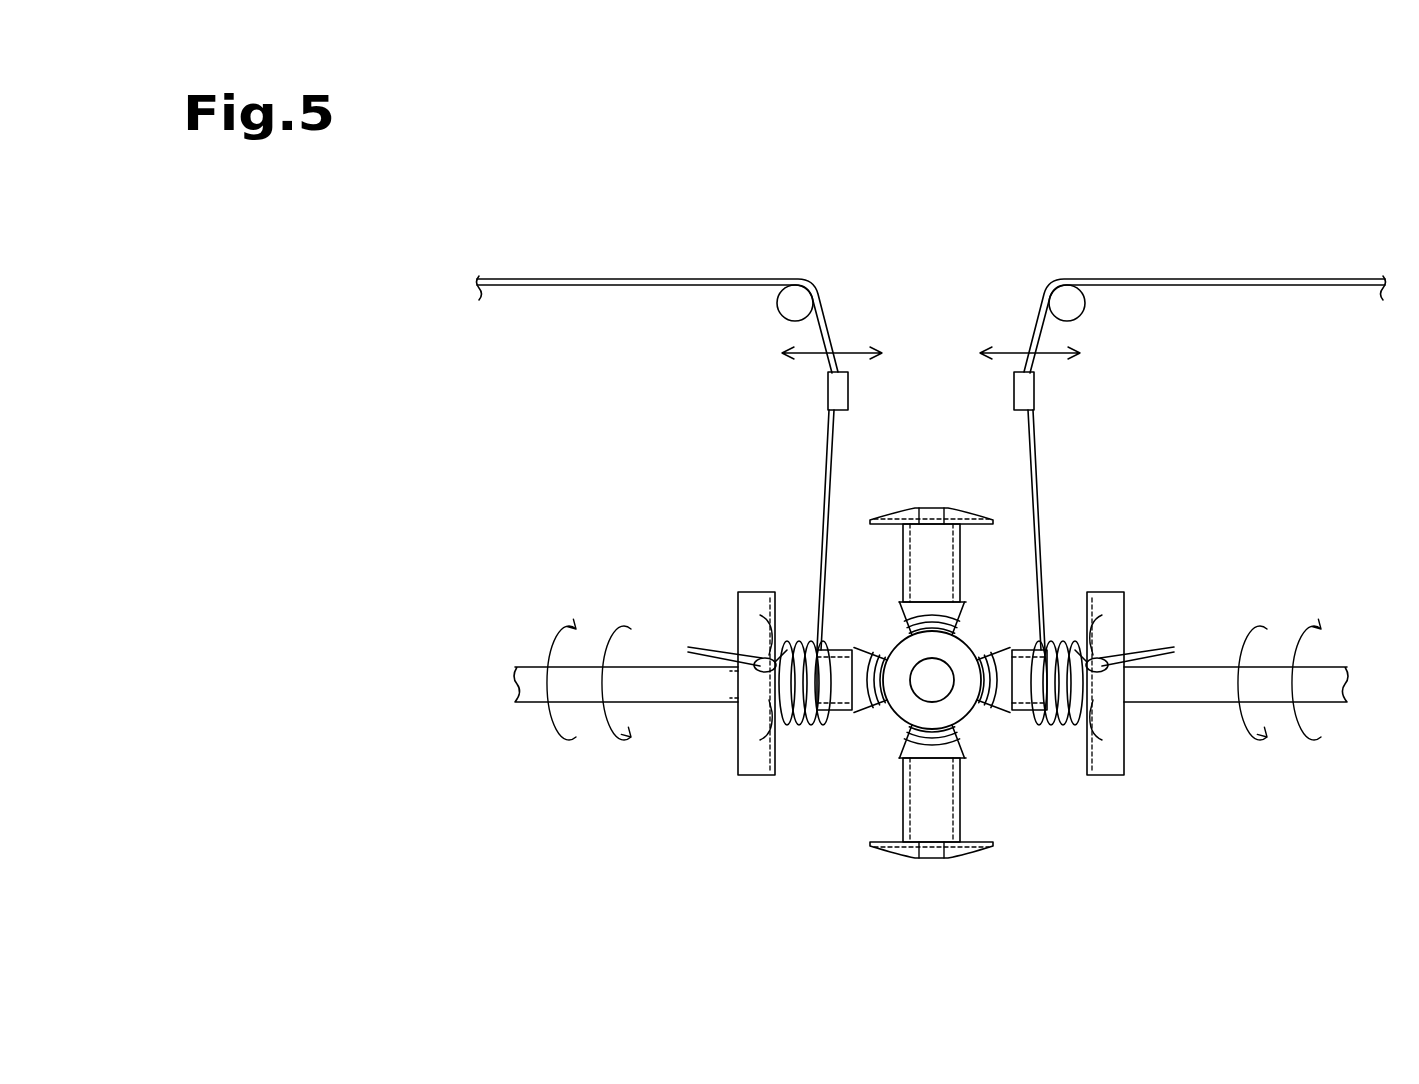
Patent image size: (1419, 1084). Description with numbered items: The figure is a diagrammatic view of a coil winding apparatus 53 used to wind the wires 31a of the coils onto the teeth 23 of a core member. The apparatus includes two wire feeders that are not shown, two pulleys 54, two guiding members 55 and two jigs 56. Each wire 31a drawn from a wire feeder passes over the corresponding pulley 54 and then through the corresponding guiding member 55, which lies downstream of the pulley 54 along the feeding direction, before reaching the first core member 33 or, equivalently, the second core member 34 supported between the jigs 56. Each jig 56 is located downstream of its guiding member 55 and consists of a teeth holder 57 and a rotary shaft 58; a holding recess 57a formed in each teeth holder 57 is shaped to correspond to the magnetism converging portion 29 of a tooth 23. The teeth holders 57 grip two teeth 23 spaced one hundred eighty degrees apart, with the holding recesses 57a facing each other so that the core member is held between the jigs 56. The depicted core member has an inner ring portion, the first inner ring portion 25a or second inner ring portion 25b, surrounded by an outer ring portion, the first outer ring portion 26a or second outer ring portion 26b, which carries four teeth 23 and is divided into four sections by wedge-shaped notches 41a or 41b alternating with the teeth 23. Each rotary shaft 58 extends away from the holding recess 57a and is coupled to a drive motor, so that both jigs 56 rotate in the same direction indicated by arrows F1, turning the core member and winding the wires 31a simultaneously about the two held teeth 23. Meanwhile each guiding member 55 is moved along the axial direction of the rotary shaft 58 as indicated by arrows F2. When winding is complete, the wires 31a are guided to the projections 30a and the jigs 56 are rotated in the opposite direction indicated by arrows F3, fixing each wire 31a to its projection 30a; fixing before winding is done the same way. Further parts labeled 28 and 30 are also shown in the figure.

The coil winding apparatus 53 is at (931, 386).
The wire 31a is at (636, 278).
The pulley 54 is at (805, 282).
The guiding member 55 is at (828, 400).
The jig 56 is at (931, 649).
The teeth holder 57 is at (753, 594).
The rotary shaft 58 is at (677, 667).
The holding recess 57a is at (767, 753).
The first core member 33 is at (932, 689).
The second core member 34 is at (932, 689).
The notch 41a is at (894, 716).
The notch 41b is at (872, 717).
The first inner ring portion 25a is at (858, 638).
The second inner ring portion 25b is at (900, 653).
The first outer ring portion 26a is at (1006, 638).
The second outer ring portion 26b is at (965, 629).
The teeth 23 is at (897, 545).
The pin shaft 28 is at (1020, 725).
The magnetism converging portion 29 is at (880, 828).
The cap 30 is at (966, 512).
The projection 30a is at (930, 508).
The arrows indicating rotation direction F1 is at (614, 632).
The arrows indicating guiding member movement F2 is at (846, 352).
The arrows indicating reverse rotation direction F3 is at (541, 650).